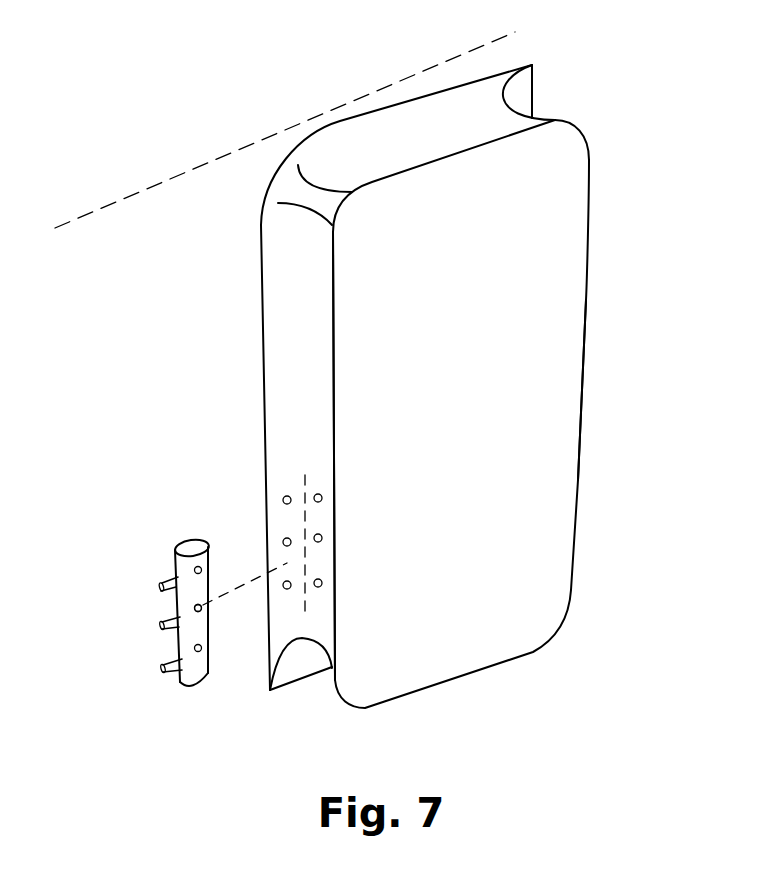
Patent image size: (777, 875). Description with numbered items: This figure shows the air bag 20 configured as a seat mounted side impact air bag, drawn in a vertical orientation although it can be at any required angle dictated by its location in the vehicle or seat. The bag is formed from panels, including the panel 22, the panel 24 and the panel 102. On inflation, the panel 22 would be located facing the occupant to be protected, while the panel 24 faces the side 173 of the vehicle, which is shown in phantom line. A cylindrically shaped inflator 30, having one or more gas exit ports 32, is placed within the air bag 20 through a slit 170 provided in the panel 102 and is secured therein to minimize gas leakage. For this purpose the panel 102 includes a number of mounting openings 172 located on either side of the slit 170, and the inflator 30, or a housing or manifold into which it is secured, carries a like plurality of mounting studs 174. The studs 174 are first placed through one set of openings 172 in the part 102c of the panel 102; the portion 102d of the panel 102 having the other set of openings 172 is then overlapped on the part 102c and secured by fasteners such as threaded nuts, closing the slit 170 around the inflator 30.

The air bag 20 is at (566, 653).
The panel 22 is at (550, 253).
The panel 24 is at (385, 262).
The inflator 30 is at (194, 622).
The gas exit ports 32 is at (202, 606).
The panel 102 is at (279, 504).
The part of panel 102c is at (277, 590).
The portion of panel 102d is at (312, 610).
The slit 170 is at (308, 490).
The mounting openings 172 is at (282, 500).
The side of the vehicle 173 is at (230, 148).
The mounting studs 174 is at (170, 677).